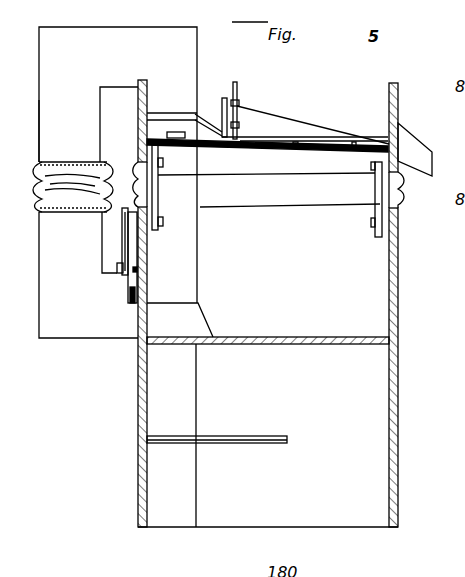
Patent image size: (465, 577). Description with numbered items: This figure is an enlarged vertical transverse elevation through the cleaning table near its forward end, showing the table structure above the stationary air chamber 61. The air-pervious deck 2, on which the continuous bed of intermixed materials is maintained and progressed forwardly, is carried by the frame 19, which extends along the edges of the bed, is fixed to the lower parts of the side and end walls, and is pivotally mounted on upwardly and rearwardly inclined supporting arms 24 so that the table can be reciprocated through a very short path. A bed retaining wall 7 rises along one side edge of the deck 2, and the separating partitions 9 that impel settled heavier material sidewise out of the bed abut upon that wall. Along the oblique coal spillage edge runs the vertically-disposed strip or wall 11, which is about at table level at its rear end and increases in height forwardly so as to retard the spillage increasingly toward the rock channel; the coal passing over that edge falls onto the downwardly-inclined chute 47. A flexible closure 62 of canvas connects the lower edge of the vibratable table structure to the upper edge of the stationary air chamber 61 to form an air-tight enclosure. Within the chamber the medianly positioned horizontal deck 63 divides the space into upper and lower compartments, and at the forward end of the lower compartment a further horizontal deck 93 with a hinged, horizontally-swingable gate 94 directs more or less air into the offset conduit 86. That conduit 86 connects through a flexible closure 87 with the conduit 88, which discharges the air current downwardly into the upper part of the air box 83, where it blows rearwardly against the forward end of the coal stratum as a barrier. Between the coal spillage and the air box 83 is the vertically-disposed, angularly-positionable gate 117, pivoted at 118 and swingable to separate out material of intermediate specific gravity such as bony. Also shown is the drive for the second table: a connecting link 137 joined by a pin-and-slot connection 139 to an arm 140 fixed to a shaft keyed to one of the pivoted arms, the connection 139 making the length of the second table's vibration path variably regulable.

The air-pervious bottom or deck 2 is at (269, 151).
The bed retaining wall 7 is at (389, 89).
The separating partitions 9 is at (322, 145).
The vertically-disposed strip or wall 11 is at (287, 125).
The frame 19 is at (156, 151).
The arm 24 is at (158, 190).
The downwardly-inclined chute 47 is at (412, 147).
The stationary air chamber 61 is at (374, 278).
The flexible closure 62 is at (405, 193).
The horizontally-disposed deck 63 is at (283, 345).
The air box 83 is at (178, 86).
The offset conduit 86 is at (52, 250).
The flexible closure 87 is at (34, 183).
The conduit 88 is at (52, 105).
The horizontally-disposed deck 93 is at (209, 434).
The hinged gate 94 is at (253, 444).
The gate 117 is at (240, 99).
The pivot 118 is at (244, 105).
The connecting link 137 is at (122, 237).
The pin-and-slot connection 139 is at (116, 268).
The arm 140 is at (132, 285).